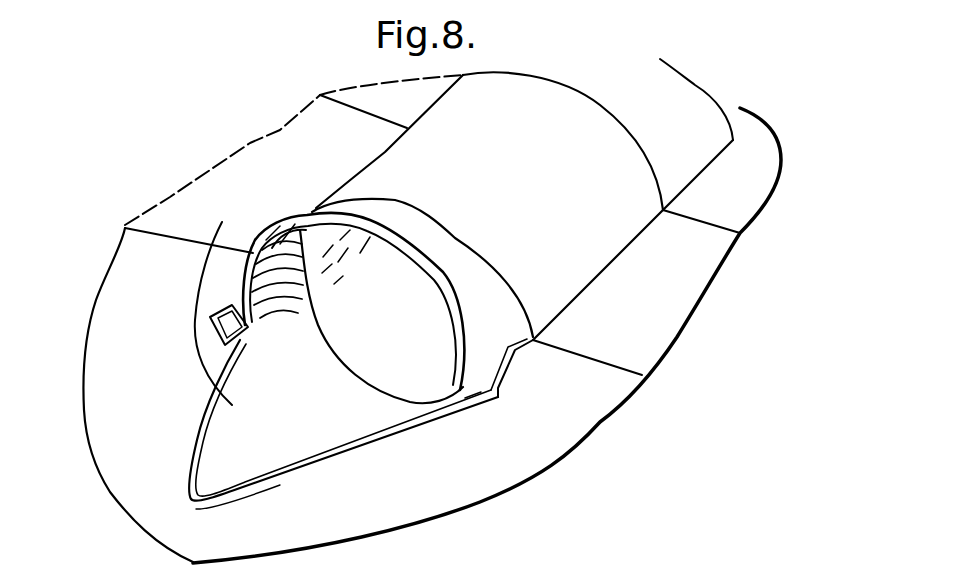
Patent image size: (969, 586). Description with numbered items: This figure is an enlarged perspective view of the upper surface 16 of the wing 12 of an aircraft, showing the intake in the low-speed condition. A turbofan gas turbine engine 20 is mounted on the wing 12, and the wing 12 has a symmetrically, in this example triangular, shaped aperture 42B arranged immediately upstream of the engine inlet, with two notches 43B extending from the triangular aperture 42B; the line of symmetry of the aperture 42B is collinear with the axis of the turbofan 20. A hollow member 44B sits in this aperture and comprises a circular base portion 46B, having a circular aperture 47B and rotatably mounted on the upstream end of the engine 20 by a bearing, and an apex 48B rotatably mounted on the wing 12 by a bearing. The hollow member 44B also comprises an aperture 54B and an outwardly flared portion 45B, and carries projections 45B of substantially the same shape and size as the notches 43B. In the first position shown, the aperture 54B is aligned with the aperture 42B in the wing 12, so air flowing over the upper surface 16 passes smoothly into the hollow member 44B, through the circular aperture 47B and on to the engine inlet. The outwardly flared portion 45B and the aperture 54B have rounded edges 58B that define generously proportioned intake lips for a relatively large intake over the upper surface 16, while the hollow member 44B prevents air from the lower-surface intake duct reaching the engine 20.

The wing 12 is at (143, 276).
The upper surface 16 is at (534, 454).
The turbofan gas turbine engine 20 is at (570, 128).
The aperture 42B is at (240, 342).
The notches 43B is at (472, 392).
The hollow member 44B is at (515, 333).
The outwardly flared portion 45B is at (503, 394).
The circular base portion 46B is at (493, 292).
The circular aperture 47B is at (416, 362).
The apex 48B is at (198, 511).
The aperture 54B is at (210, 405).
The rounded edges 58B is at (253, 247).